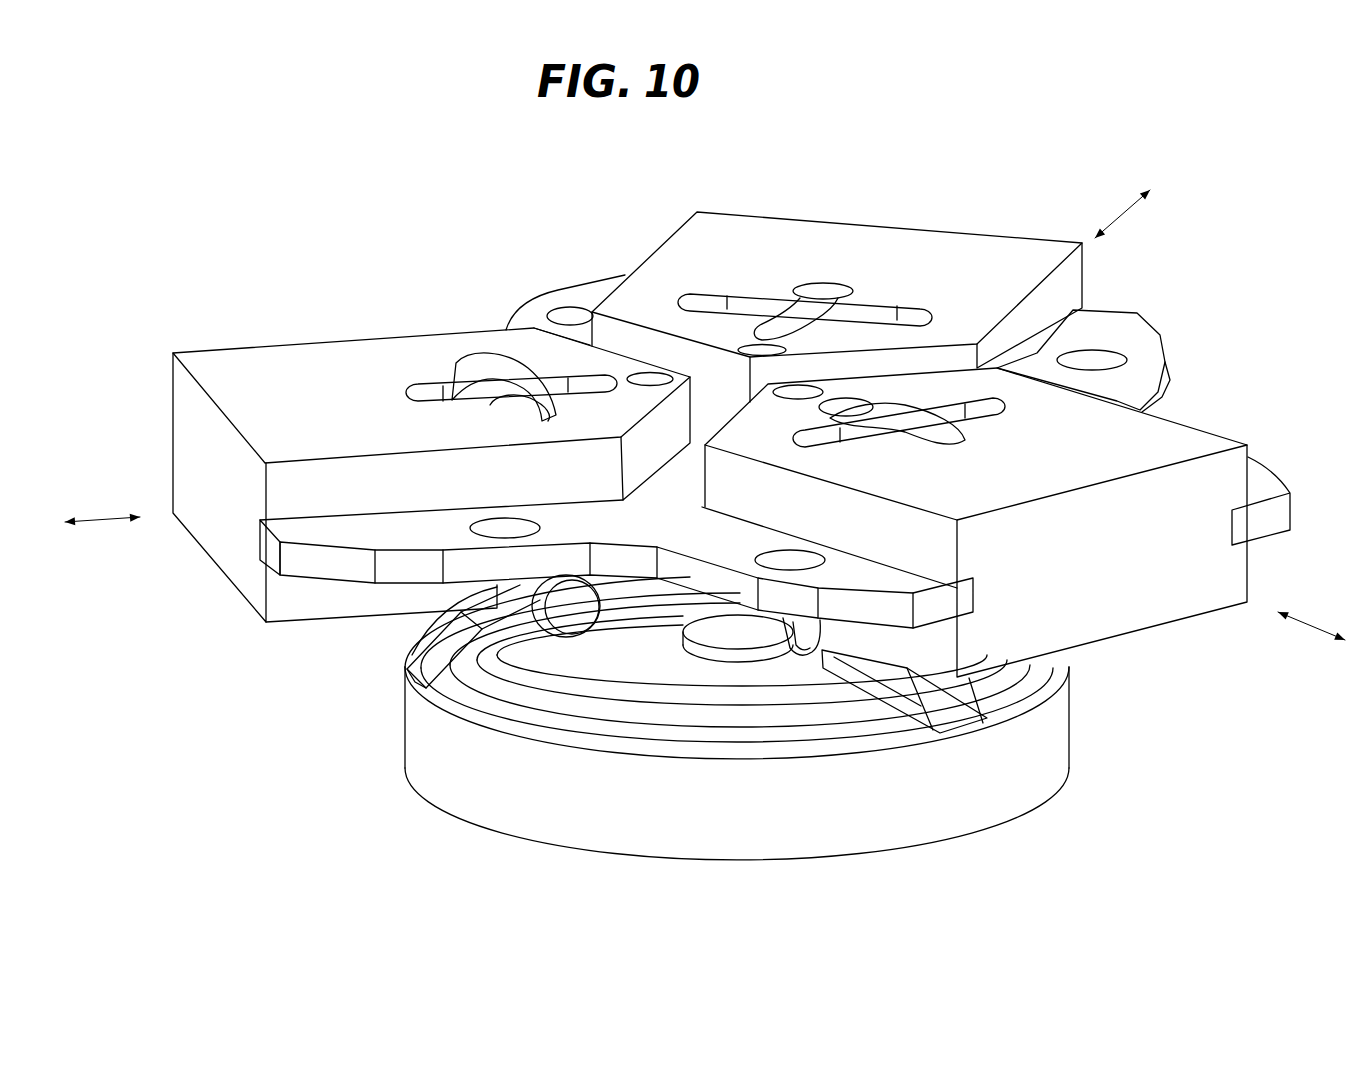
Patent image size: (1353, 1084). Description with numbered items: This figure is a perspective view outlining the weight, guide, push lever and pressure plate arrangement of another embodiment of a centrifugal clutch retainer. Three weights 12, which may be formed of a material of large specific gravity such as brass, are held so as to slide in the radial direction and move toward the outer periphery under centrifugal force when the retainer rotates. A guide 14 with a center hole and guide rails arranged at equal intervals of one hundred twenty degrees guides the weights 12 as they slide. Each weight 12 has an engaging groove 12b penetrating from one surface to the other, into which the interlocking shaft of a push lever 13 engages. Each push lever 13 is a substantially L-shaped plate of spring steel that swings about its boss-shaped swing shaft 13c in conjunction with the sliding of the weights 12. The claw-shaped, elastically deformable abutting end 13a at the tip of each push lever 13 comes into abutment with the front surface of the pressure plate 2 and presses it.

The pressure plate 2 is at (1048, 742).
The weight 12 is at (768, 226).
The engaging groove 12b is at (697, 300).
The push lever 13 is at (801, 304).
The abutting end 13a is at (409, 675).
The swing shaft 13c is at (568, 619).
The guide 14 is at (1148, 343).